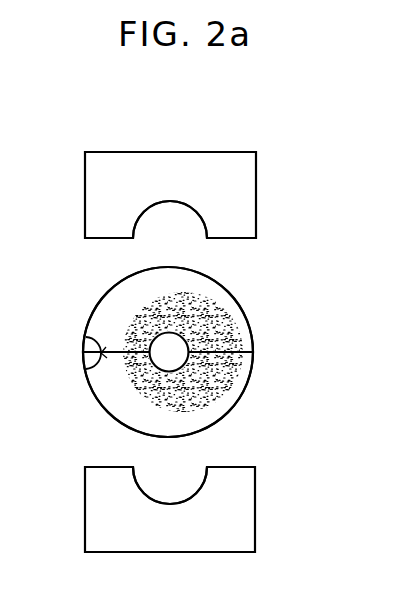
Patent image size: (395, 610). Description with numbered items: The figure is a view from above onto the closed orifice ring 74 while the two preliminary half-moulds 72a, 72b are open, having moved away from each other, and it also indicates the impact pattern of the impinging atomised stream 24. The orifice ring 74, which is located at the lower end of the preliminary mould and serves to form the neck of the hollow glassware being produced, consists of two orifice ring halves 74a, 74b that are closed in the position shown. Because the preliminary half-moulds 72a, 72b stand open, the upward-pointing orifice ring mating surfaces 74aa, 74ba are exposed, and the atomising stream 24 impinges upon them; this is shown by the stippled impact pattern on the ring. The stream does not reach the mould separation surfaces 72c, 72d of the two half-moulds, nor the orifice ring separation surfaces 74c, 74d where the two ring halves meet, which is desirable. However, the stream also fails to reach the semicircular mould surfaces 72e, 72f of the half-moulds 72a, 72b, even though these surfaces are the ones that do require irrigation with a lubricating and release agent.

The preliminary half-mould 72b is at (213, 160).
The mould surface 72f is at (168, 204).
The mould separation surface 72d is at (240, 238).
The orifice ring 74 is at (248, 338).
The atomising stream 24 is at (220, 317).
The orifice ring half 74b is at (118, 295).
The orifice ring mating surface 74ba is at (214, 293).
The orifice ring mating surface 74aa is at (215, 411).
The orifice ring half 74a is at (120, 417).
The orifice ring separation surface 74d is at (88, 338).
The orifice ring separation surface 74c is at (87, 368).
The preliminary half-mould 72a is at (243, 515).
The mould separation surface 72c is at (237, 467).
The mould surface 72e is at (165, 502).